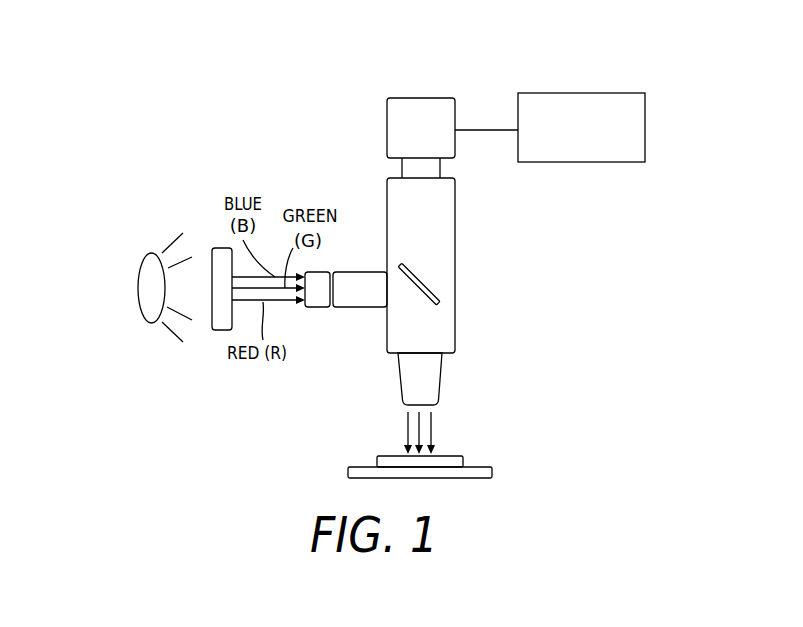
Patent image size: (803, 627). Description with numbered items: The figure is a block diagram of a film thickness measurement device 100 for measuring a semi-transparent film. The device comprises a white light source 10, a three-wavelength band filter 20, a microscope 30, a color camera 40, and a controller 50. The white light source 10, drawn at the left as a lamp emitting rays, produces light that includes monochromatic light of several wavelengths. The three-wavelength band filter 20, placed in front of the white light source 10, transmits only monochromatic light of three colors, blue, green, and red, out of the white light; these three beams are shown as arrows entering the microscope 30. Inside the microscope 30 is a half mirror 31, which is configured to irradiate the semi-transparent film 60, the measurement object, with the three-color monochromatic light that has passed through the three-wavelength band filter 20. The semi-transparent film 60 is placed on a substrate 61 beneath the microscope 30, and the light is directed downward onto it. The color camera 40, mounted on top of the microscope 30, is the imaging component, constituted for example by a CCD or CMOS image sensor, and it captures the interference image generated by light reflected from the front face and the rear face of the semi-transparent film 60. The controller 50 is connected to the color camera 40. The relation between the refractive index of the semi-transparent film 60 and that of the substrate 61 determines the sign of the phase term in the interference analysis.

The film thickness measurement device 100 is at (99, 87).
The white light source 10 is at (148, 256).
The three-wavelength band filter 20 is at (223, 249).
The microscope 30 is at (455, 242).
The half mirror 31 is at (435, 290).
The color camera 40 is at (455, 108).
The controller 50 is at (647, 131).
The semi-transparent film 60 is at (452, 455).
The substrate 61 is at (492, 469).